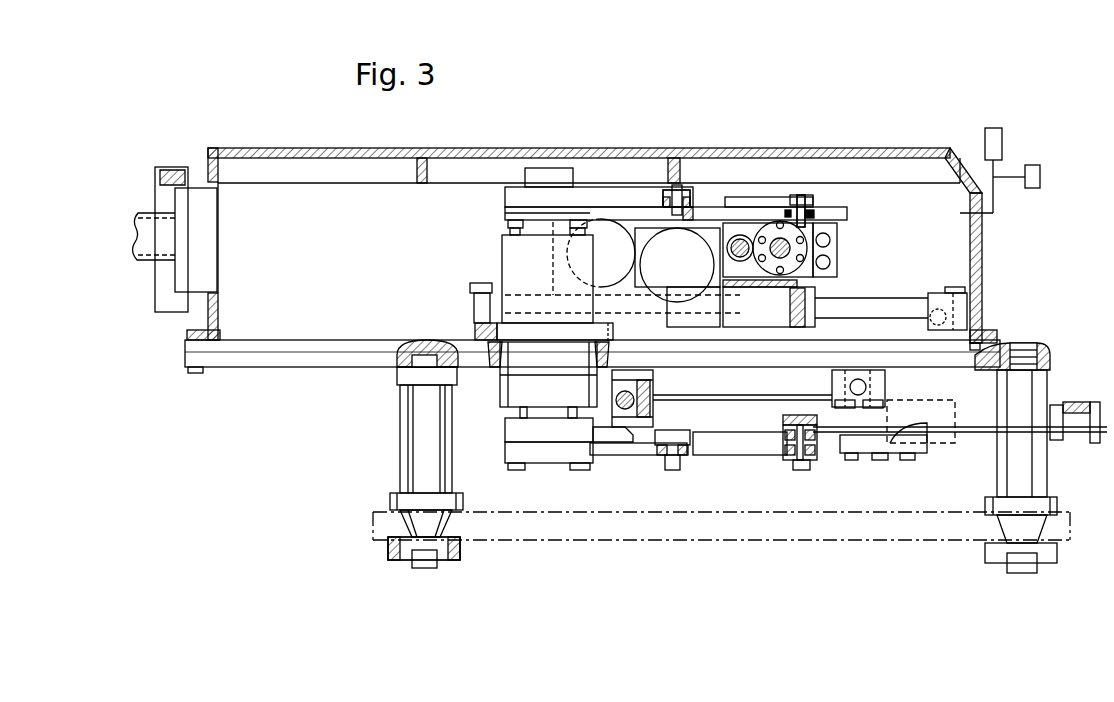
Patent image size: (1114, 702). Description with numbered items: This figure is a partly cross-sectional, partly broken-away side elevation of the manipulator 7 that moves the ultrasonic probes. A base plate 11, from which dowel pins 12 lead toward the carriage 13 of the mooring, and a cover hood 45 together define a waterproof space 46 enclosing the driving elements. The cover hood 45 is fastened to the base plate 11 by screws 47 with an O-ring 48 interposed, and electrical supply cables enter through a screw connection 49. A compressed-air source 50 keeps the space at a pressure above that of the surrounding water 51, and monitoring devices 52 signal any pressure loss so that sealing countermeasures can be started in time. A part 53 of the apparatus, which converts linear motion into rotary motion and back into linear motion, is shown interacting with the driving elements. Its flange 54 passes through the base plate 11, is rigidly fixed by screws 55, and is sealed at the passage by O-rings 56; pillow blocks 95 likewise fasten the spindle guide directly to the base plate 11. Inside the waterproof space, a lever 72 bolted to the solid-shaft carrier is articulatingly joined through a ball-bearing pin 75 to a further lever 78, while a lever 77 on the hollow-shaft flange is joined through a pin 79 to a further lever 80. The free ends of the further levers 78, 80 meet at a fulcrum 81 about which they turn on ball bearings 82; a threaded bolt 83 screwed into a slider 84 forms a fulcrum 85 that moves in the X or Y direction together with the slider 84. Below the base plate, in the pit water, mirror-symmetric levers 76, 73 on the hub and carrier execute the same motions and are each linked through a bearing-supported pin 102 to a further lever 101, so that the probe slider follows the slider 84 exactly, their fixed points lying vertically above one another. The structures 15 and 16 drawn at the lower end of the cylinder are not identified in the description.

The manipulator 7 is at (383, 385).
The base plate 11 is at (257, 357).
The dowel pins 12 is at (418, 445).
The carriage 13 is at (568, 535).
The cylinder collar 15 is at (460, 555).
The nut 16 is at (435, 568).
The cover hood 45 is at (983, 247).
The waterproof space 46 is at (927, 256).
The screws 47 is at (985, 330).
The O-ring 48 is at (975, 348).
The screw connection 49 is at (165, 180).
The compressed-air source 50 is at (1000, 133).
The surrounding water 51 is at (1042, 223).
The monitoring devices 52 is at (1040, 168).
The part of the apparatus 53 is at (500, 258).
The flange 54 is at (610, 331).
The screws 55 is at (483, 342).
The O-rings 56 is at (605, 355).
The lever 72 is at (617, 203).
The lever 73 is at (610, 440).
The pin 75 is at (681, 192).
The lever 76 is at (638, 456).
The lever 77 is at (618, 253).
The further lever 78 is at (677, 277).
The pin 79 is at (681, 192).
The further lever 80 is at (762, 200).
The fulcrum 81 is at (803, 200).
The ball bearings 82 is at (815, 213).
The threaded bolt 83 is at (835, 240).
The slider 84 is at (815, 280).
The fulcrum 85 is at (803, 200).
The pillow blocks 95 is at (478, 312).
The further lever 101 is at (720, 445).
The pin 102 is at (670, 466).